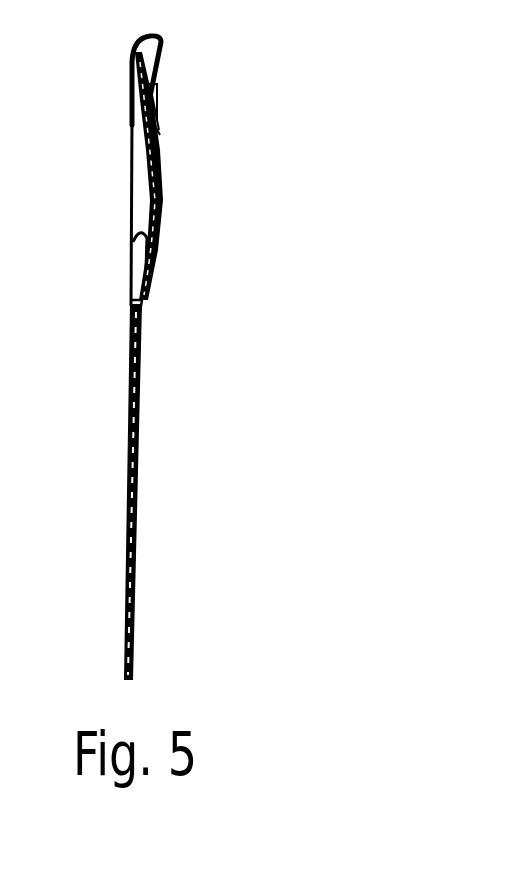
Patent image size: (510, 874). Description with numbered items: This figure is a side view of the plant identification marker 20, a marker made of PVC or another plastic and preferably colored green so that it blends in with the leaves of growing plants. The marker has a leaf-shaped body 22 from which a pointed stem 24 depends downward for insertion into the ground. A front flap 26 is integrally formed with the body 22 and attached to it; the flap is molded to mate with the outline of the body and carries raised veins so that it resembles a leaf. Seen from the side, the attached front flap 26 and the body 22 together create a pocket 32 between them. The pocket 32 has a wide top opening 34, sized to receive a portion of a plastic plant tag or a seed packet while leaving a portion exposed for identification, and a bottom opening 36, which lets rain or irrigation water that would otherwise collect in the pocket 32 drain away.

The plant identification marker 20 is at (250, 302).
The leaf-shaped body 22 is at (132, 187).
The pointed stem 24 is at (130, 453).
The front flap 26 is at (160, 134).
The pocket 32 is at (163, 102).
The top opening 34 is at (162, 131).
The bottom opening 36 is at (143, 298).